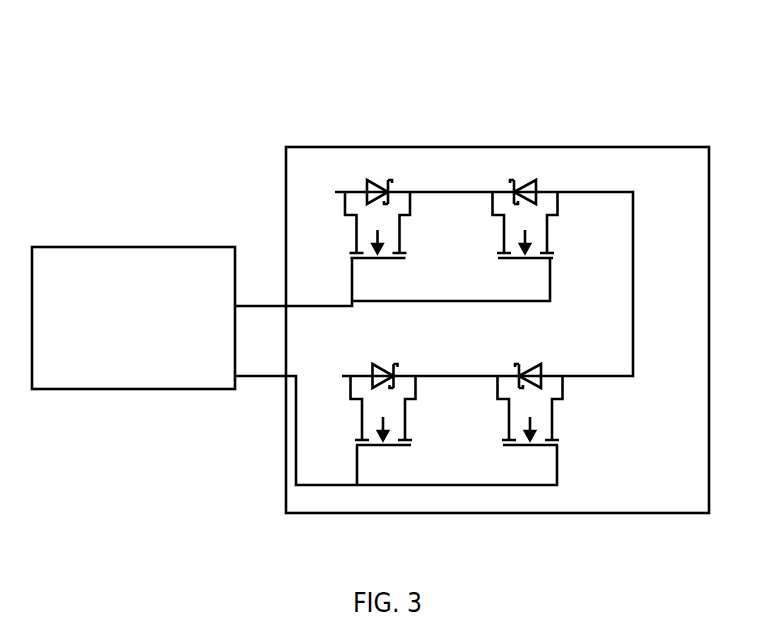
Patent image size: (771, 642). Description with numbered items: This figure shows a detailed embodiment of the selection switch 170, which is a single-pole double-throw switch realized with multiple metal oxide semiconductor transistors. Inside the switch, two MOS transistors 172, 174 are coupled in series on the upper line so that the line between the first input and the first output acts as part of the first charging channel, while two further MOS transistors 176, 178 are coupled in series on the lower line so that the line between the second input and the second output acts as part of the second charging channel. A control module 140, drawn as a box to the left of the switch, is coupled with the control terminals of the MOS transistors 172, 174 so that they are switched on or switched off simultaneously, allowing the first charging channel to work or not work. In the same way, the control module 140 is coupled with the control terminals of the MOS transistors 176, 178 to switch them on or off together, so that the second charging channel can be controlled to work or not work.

The control module 140 is at (135, 247).
The selection switch 170 is at (650, 147).
The MOS transistor 172 is at (386, 162).
The MOS transistor 174 is at (521, 162).
The MOS transistor 176 is at (390, 455).
The MOS transistor 178 is at (535, 455).